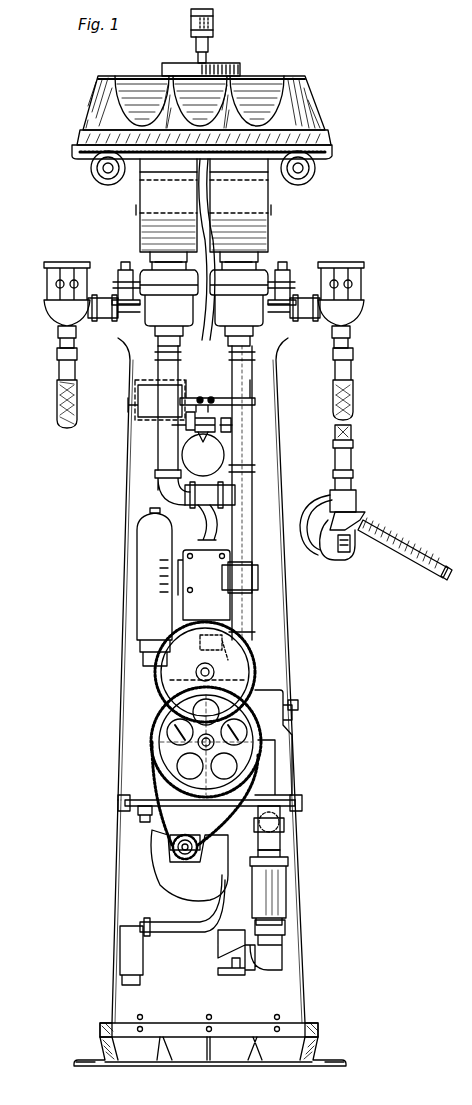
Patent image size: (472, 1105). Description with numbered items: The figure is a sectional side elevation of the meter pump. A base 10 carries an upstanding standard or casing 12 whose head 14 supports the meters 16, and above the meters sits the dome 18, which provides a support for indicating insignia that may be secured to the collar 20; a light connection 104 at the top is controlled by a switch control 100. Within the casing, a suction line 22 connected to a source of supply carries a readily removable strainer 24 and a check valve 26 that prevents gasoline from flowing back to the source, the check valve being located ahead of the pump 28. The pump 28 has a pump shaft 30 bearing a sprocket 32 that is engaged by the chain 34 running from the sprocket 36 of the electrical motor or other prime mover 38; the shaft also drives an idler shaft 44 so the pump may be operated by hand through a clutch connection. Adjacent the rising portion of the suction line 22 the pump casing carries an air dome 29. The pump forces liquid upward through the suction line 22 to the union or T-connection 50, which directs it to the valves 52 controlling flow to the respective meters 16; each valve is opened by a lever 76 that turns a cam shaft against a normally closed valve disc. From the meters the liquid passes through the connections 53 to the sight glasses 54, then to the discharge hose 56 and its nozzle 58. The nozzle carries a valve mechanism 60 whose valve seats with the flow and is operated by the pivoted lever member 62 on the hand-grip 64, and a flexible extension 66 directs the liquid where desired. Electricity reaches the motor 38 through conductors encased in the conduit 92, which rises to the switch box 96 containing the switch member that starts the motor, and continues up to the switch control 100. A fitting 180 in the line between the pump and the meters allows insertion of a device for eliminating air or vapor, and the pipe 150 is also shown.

The base 10 is at (318, 1037).
The casing 12 is at (305, 963).
The head 14 is at (131, 380).
The meters 16 is at (140, 200).
The dome 18 is at (316, 106).
The collar 20 is at (231, 65).
The suction line 22 is at (253, 612).
The strainer 24 is at (288, 878).
The check valve 26 is at (284, 824).
The pump 28 is at (272, 715).
The air dome 29 is at (145, 592).
The pump shaft 30 is at (215, 740).
The sprocket 32 is at (245, 757).
The chain 34 is at (248, 778).
The sprocket 36 is at (172, 846).
The electrical motor 38 is at (163, 868).
The idler shaft 44 is at (215, 668).
The T-connection 50 is at (240, 495).
The valves 52 is at (214, 418).
The connections 53 is at (122, 262).
The sight glasses 54 is at (44, 268).
The discharge hose 56 is at (60, 392).
The nozzle 58 is at (360, 512).
The valve mechanism 60 is at (352, 555).
The pivoted lever member 62 is at (338, 552).
The hand-grip 64 is at (310, 525).
The flexible extension 66 is at (353, 392).
The lever 76 is at (203, 455).
The conduit 92 is at (203, 525).
The switch box 96 is at (204, 585).
The switch control 100 is at (222, 448).
The light connection 104 is at (214, 22).
The pipe 150 is at (104, 298).
The fitting 180 is at (258, 575).